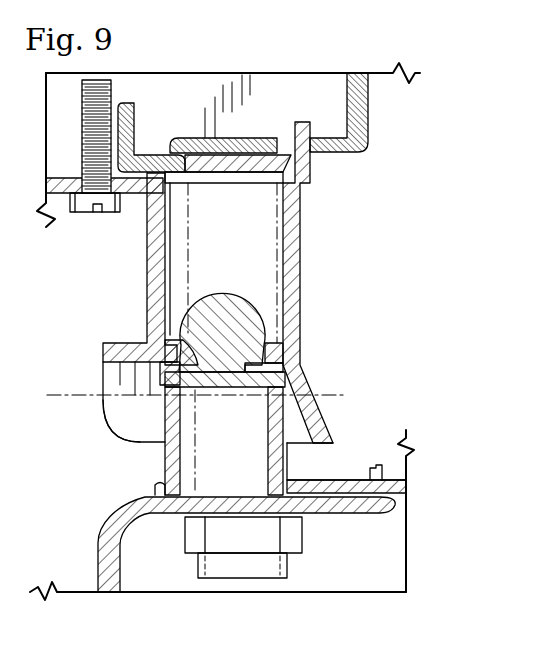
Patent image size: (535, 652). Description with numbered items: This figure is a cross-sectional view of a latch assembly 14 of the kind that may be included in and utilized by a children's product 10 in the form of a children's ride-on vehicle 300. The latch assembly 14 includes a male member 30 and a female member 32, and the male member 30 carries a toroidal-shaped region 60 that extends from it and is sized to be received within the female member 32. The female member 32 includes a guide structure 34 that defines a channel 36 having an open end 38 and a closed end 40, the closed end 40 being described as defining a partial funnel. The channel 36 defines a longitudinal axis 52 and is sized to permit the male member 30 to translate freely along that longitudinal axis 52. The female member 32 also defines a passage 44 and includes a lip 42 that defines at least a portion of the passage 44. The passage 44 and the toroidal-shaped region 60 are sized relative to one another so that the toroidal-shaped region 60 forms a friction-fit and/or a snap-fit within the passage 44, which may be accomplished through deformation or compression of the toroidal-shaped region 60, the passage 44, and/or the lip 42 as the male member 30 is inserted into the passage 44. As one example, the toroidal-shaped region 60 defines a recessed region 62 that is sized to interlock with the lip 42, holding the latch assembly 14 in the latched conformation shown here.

The children's product 10 is at (434, 133).
The children's ride-on vehicle 300 is at (426, 183).
The latch assembly 14 is at (381, 192).
The female member 32 is at (303, 252).
The lip 42 is at (280, 341).
The passage 44 is at (178, 353).
The toroidal-shaped region 60 is at (217, 291).
The recessed region 62 is at (266, 369).
The guide structure 34 is at (333, 438).
The closed end 40 is at (304, 452).
The male member 30 is at (159, 458).
The longitudinal axis 52 is at (83, 393).
The channel 36 is at (99, 412).
The open end 38 is at (111, 439).